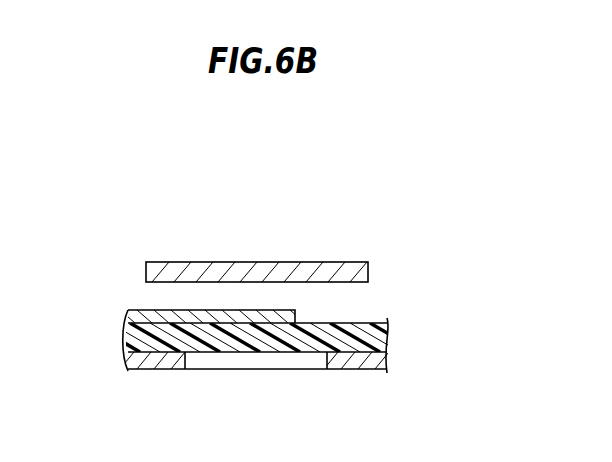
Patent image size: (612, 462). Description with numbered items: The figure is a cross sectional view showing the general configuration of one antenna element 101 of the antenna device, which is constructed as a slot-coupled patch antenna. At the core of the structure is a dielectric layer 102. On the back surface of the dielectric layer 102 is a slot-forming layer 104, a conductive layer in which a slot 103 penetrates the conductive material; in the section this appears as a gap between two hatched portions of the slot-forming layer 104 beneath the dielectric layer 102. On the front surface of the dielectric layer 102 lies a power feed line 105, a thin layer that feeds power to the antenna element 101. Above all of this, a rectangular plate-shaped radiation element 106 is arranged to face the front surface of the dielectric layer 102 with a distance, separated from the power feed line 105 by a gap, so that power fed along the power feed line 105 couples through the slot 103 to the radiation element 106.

The antenna element 101 is at (138, 239).
The dielectric layer 102 is at (376, 338).
The slot 103 is at (283, 360).
The slot-forming layer 104 is at (376, 361).
The power feed line 105 is at (235, 311).
The radiation element 106 is at (367, 262).